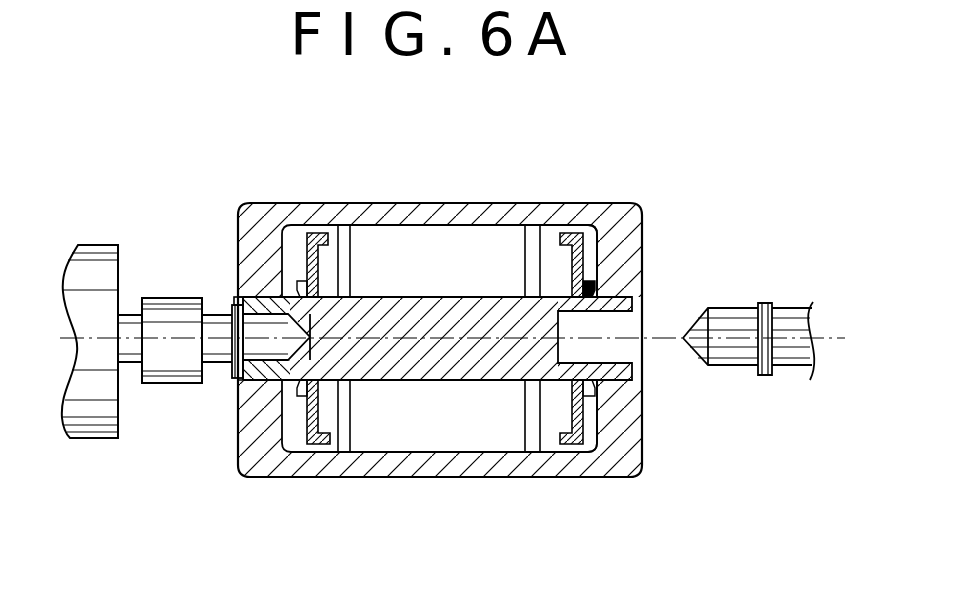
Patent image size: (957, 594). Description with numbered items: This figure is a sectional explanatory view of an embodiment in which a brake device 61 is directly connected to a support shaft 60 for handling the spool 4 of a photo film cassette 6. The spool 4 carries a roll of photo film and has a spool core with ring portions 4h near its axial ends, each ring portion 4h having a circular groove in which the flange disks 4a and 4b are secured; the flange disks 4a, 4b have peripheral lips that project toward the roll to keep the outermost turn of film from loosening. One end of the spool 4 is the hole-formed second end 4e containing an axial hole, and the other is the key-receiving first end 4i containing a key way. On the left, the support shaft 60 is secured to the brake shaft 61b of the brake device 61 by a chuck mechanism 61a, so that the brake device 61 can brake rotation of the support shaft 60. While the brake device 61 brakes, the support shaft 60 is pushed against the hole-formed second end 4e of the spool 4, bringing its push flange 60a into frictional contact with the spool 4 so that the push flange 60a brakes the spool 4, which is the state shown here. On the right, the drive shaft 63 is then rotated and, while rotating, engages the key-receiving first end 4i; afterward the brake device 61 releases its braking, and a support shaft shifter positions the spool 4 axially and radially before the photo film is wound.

The spool 4 is at (377, 382).
The flange disk 4a is at (573, 236).
The flange disk 4b is at (318, 262).
The hole-formed second end 4e is at (290, 227).
The ring portion 4h is at (595, 290).
The key-receiving first end 4i is at (642, 348).
The photo film cassette 6 is at (402, 478).
The support shaft 60 is at (221, 364).
The push flange 60a is at (236, 302).
The brake device 61 is at (96, 440).
The chuck mechanism 61a is at (167, 298).
The brake shaft 61b is at (127, 360).
The drive shaft 63 is at (738, 318).